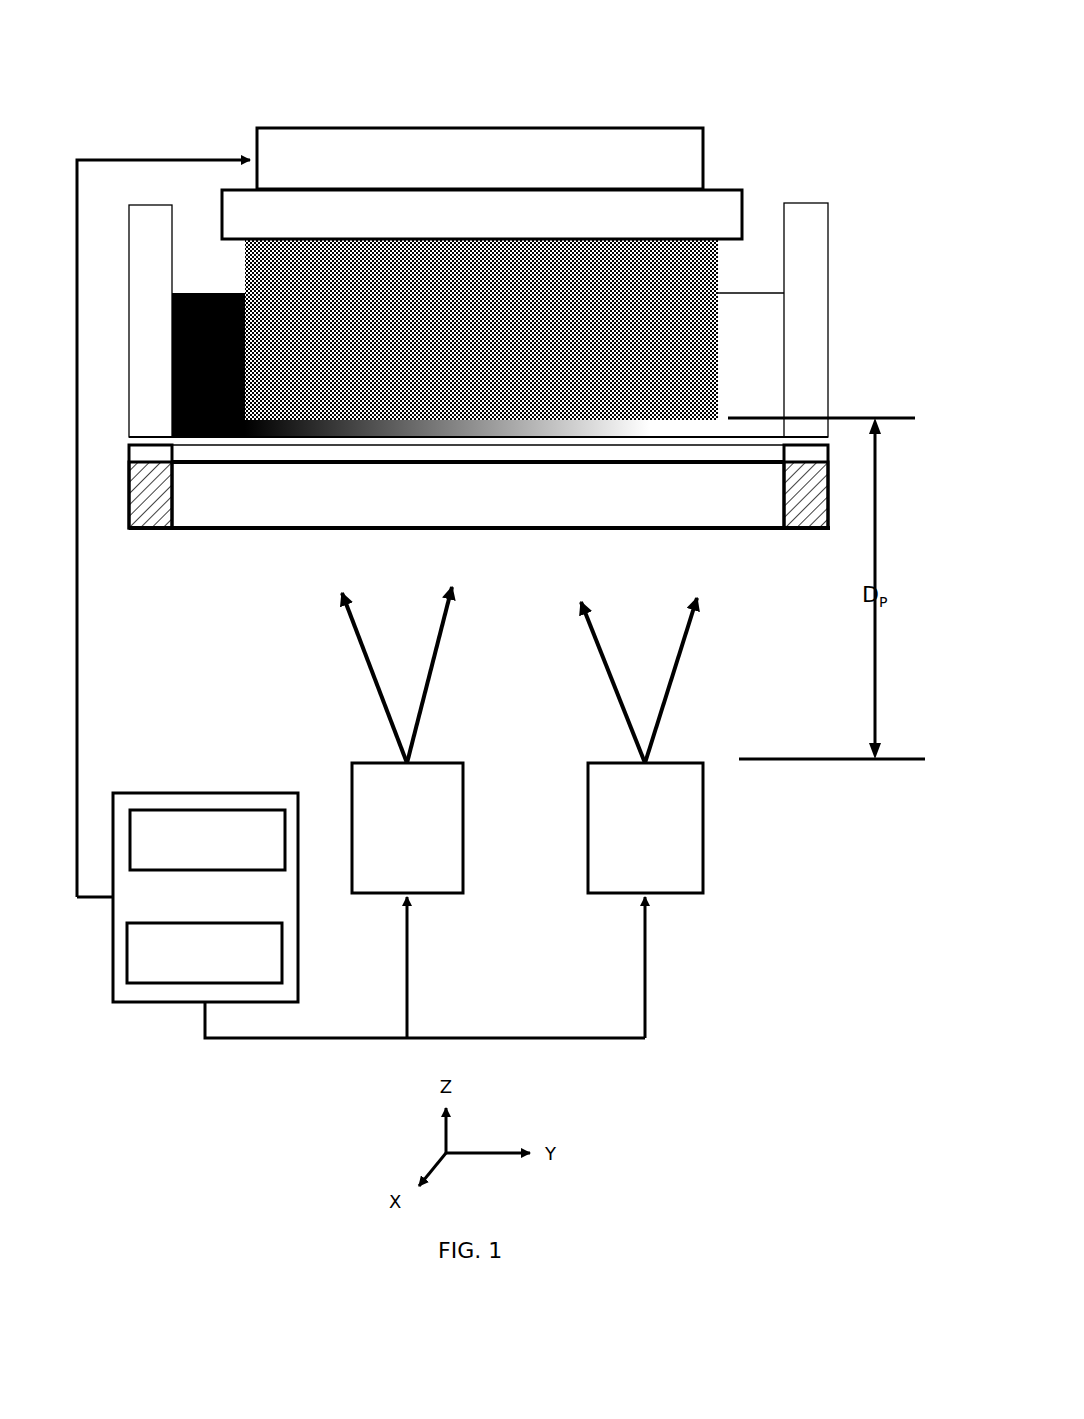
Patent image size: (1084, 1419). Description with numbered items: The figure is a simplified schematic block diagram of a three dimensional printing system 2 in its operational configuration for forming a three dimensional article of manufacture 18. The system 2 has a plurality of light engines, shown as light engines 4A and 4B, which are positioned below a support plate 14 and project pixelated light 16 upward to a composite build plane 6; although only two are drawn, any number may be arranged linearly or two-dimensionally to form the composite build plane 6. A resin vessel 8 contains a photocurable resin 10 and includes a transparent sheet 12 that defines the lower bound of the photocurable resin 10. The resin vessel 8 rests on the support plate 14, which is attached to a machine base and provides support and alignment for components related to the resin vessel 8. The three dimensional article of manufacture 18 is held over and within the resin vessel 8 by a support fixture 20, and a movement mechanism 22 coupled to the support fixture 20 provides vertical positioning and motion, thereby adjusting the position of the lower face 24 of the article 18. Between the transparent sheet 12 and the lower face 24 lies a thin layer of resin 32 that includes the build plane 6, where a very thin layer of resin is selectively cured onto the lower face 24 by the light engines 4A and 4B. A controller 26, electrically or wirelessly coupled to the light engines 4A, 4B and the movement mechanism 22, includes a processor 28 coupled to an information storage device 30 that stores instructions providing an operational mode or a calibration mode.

The three dimensional printing system 2 is at (688, 74).
The light engine 4A is at (407, 828).
The light engine 4B is at (645, 828).
The composite build plane 6 is at (348, 427).
The resin vessel 8 is at (818, 238).
The photocurable resin 10 is at (768, 348).
The transparent sheet 12 is at (283, 438).
The support plate 14 is at (148, 520).
The pixelated light 16 is at (437, 663).
The three dimensional article of manufacture 18 is at (693, 400).
The support fixture 20 is at (723, 200).
The movement mechanism 22 is at (423, 133).
The lower face 24 is at (627, 422).
The controller 26 is at (137, 792).
The processor 28 is at (210, 810).
The information storage device 30 is at (140, 985).
The thin layer of resin 32 is at (467, 430).